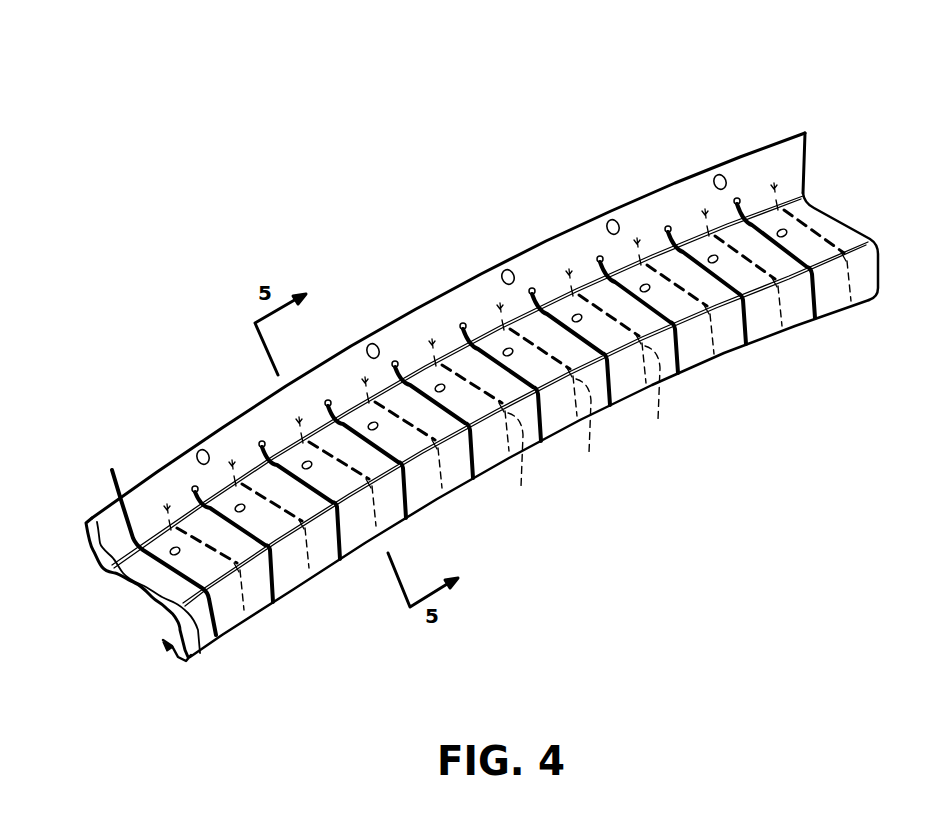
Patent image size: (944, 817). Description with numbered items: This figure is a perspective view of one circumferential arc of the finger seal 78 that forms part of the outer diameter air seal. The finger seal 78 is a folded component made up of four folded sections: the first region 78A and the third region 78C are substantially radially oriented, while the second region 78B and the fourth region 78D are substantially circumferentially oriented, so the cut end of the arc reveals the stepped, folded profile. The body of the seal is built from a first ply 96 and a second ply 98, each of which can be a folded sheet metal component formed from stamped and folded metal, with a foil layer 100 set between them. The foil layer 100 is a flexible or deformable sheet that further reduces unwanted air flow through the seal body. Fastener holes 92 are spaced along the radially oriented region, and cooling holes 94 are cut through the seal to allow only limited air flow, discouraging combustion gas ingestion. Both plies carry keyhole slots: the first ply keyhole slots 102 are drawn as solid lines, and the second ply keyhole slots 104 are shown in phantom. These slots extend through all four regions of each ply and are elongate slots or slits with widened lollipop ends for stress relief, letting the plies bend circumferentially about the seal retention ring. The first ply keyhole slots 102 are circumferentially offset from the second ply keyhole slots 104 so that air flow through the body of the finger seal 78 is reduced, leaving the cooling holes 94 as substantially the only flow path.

The finger seal 78 is at (686, 123).
The first region 78A is at (95, 575).
The second region 78B is at (142, 605).
The third region 78C is at (196, 627).
The fourth region 78D is at (170, 657).
The fastener holes 92 is at (200, 448).
The cooling holes 94 is at (244, 509).
The first ply 96 is at (92, 522).
The second ply 98 is at (142, 508).
The foil layer 100 is at (115, 520).
The first ply keyhole slots 102 is at (478, 474).
The second ply keyhole slots 104 is at (521, 488).